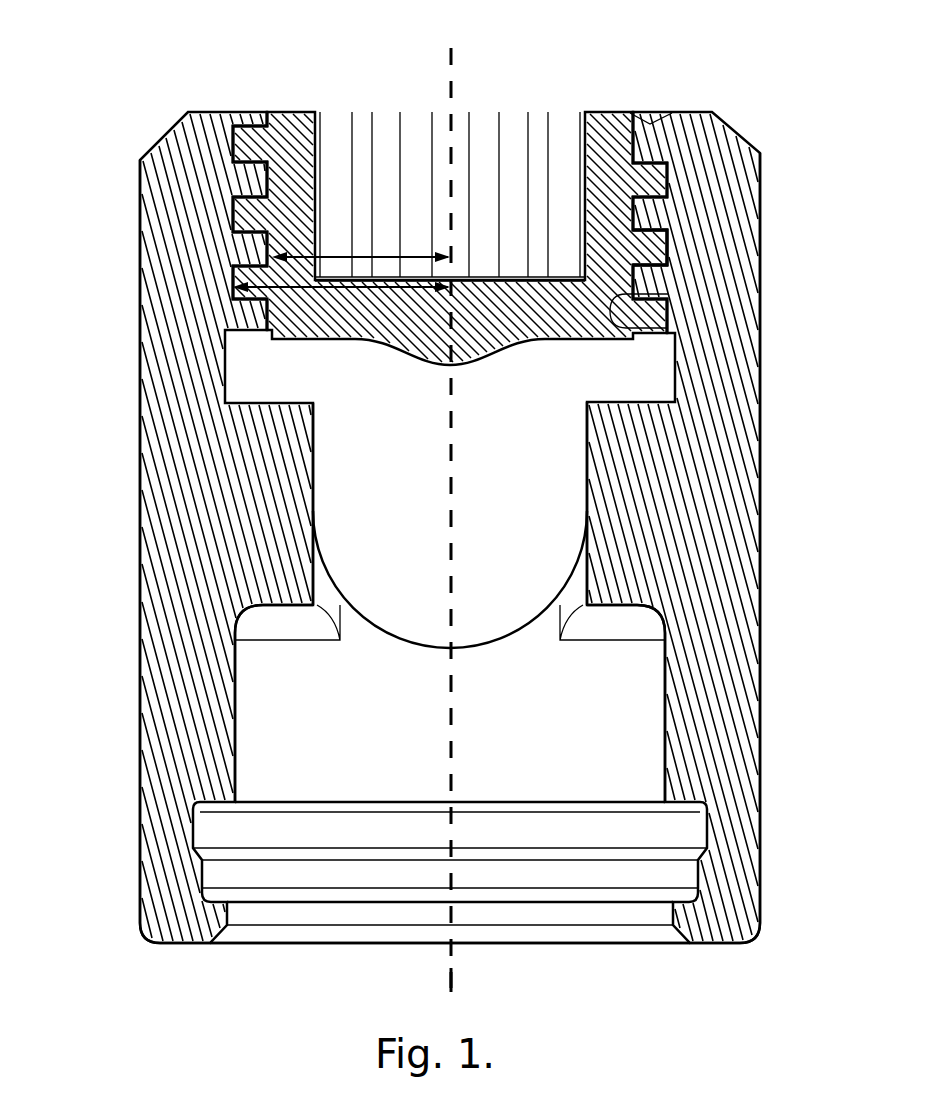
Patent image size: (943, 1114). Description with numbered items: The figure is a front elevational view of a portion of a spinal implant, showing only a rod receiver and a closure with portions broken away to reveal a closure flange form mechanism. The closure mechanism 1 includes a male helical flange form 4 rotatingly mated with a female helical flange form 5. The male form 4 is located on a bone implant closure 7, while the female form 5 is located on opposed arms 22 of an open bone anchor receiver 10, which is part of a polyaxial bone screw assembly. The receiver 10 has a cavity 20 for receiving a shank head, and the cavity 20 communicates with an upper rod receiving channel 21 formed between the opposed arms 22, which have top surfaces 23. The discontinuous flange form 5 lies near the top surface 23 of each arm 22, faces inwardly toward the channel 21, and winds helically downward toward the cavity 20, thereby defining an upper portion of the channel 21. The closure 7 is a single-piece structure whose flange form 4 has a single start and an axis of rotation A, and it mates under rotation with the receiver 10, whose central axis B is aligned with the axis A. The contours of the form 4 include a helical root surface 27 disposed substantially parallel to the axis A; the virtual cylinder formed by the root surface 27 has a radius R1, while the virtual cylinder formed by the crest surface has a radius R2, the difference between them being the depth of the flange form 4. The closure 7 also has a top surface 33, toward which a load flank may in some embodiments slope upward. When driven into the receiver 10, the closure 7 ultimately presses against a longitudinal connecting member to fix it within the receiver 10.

The closure mechanism 1 is at (720, 151).
The male helical flange form 4 is at (670, 247).
The female helical flange form 5 is at (617, 321).
The bone implant closure 7 is at (290, 135).
The open bone anchor receiver 10 is at (762, 412).
The cavity 20 is at (642, 690).
The rod receiving channel 21 is at (352, 544).
The arms 22 is at (142, 355).
The top surfaces 23 is at (212, 112).
The root surface 27 is at (650, 123).
The top surface 33 is at (505, 112).
The axis of rotation A is at (450, 100).
The central axis B is at (455, 975).
The radius R1 is at (361, 246).
The radius R2 is at (341, 298).